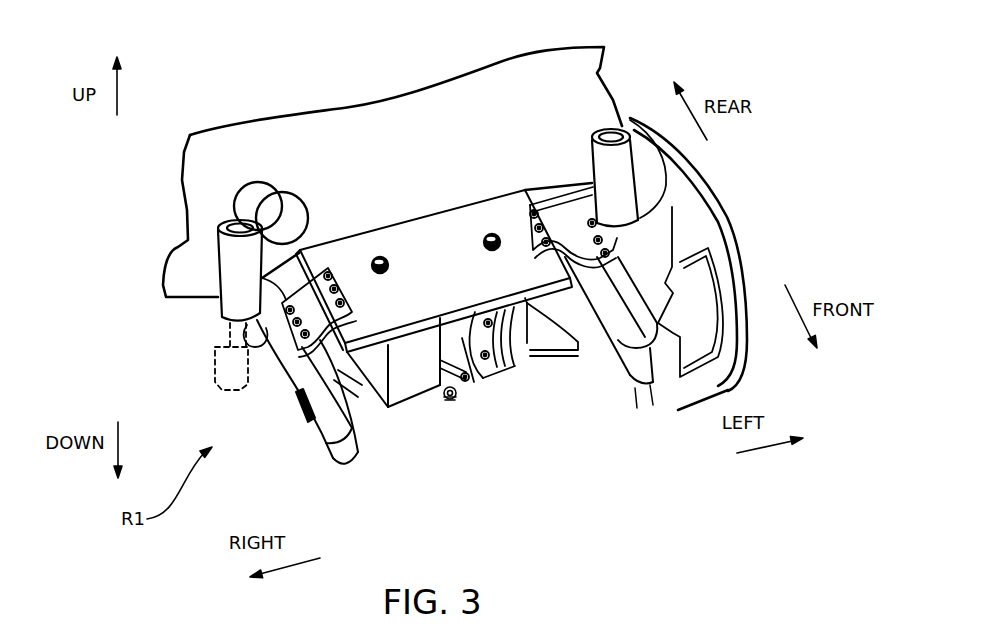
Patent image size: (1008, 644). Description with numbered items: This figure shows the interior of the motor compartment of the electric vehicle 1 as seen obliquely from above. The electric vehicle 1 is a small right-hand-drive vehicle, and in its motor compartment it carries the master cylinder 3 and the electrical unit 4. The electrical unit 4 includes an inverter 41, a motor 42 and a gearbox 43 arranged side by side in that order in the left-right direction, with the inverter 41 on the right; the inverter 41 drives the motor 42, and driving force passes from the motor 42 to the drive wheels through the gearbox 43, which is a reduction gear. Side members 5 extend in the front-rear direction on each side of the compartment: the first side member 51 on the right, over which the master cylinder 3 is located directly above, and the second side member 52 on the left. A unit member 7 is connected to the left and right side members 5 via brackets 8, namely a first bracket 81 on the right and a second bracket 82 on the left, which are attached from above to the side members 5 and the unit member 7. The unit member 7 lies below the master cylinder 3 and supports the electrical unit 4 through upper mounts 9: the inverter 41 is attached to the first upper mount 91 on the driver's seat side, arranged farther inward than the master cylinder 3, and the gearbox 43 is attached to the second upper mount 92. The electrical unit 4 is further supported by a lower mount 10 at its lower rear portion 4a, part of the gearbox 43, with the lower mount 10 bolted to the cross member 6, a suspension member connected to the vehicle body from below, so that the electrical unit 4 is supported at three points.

The electric vehicle 1 is at (576, 0).
The master cylinder 3 is at (266, 186).
The electrical unit 4 is at (465, 428).
The lower rear portion 4a is at (445, 400).
The side members 5 is at (457, 386).
The first side member 51 is at (338, 458).
The second side member 52 is at (618, 325).
The cross member 6 is at (567, 356).
The unit member 7 is at (430, 250).
The brackets 8 is at (495, 272).
The first bracket 81 is at (250, 327).
The second bracket 82 is at (628, 226).
The upper mounts 9 is at (426, 147).
The first upper mount 91 is at (378, 256).
The second upper mount 92 is at (492, 233).
The lower mount 10 is at (451, 401).
The inverter 41 is at (417, 405).
The motor 42 is at (484, 385).
The gearbox 43 is at (535, 407).